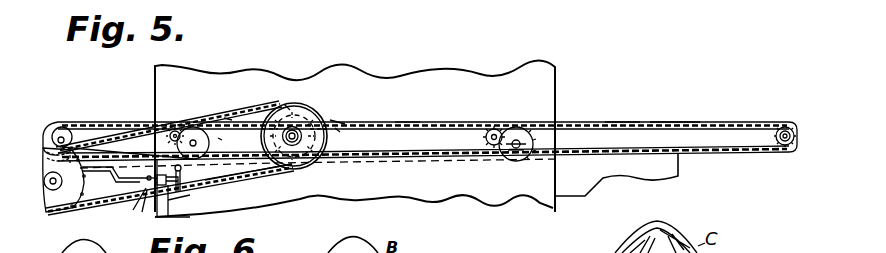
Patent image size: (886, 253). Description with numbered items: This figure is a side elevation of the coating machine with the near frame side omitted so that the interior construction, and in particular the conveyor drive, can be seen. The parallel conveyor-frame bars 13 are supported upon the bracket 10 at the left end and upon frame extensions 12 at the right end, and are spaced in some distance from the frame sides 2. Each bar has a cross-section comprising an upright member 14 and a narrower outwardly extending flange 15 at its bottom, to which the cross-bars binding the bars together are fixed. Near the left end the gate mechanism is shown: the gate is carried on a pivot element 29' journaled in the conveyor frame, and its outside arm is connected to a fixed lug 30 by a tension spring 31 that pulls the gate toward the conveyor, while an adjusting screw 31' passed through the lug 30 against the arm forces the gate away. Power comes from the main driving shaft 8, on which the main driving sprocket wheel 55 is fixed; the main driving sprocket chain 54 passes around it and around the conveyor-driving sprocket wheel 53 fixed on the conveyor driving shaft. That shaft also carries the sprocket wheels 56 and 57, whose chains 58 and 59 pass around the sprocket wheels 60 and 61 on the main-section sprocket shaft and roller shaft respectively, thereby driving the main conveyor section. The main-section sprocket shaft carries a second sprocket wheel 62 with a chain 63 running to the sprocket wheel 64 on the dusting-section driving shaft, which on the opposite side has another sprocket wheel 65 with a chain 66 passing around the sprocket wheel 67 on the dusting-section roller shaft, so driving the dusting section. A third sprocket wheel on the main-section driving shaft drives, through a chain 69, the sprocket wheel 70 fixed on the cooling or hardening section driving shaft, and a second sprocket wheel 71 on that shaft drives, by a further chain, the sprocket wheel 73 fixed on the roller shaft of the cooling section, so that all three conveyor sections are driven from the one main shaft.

The frame sides 2 is at (548, 97).
The main driving shaft 8 is at (64, 180).
The bracket 10 is at (133, 205).
The frame extensions 12 is at (600, 178).
The conveyor-frame bars 13 is at (623, 130).
The upright member 14 is at (672, 131).
The outwardly extending member or flange 15 is at (606, 151).
The pivot element 29' is at (191, 178).
The fixed lug 30 is at (159, 190).
The tension spring 31 is at (173, 194).
The adjusting screw 31' is at (131, 215).
The conveyor-driving sprocket wheel 53 is at (307, 114).
The main driving sprocket chain 54 is at (246, 186).
The main driving sprocket wheel 55 is at (170, 196).
The sprocket wheel 56 is at (287, 118).
The sprocket wheel 57 is at (338, 122).
The chain 58 is at (233, 114).
The chain 59 is at (404, 123).
The sprocket wheel 60 is at (230, 139).
The sprocket wheel 61 is at (496, 128).
The second sprocket wheel 62 is at (180, 130).
The chain 63 is at (121, 123).
The sprocket wheel 64 is at (67, 126).
The sprocket wheel 65 is at (50, 122).
The chain 66 is at (116, 174).
The sprocket wheel 67 is at (189, 126).
The chain 69 is at (350, 138).
The sprocket wheel 70 is at (518, 127).
The second sprocket wheel 71 is at (515, 158).
The sprocket wheel 73 is at (784, 126).